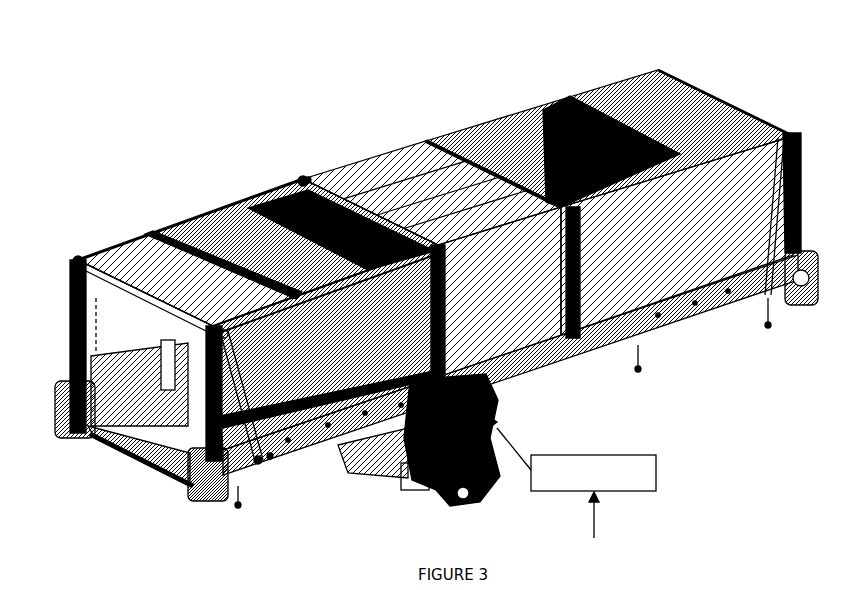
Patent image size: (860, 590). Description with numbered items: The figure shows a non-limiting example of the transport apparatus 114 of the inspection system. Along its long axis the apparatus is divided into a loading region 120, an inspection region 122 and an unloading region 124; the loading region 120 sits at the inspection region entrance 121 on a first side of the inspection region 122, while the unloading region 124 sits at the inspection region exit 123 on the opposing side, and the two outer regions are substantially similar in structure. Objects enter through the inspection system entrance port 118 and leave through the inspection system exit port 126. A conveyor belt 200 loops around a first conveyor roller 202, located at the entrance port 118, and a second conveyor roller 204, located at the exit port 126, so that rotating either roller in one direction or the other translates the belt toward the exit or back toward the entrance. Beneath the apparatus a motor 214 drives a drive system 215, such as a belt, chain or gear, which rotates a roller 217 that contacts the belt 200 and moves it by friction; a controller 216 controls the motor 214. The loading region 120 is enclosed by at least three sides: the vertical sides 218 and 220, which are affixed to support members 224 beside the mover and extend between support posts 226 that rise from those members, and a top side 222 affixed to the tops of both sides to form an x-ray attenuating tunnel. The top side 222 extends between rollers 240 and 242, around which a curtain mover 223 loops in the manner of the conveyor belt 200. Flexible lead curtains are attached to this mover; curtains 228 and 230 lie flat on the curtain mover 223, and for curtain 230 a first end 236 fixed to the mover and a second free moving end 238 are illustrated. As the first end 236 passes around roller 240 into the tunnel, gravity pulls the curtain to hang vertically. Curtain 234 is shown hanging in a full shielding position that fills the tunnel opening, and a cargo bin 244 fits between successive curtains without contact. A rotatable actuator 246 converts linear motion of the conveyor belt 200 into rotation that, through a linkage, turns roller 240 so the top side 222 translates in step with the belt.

The transport apparatus 114 is at (140, 85).
The inspection system entrance port 118 is at (90, 465).
The loading region 120 is at (292, 173).
The inspection region entrance 121 is at (305, 163).
The inspection region 122 is at (417, 128).
The inspection region exit 123 is at (417, 124).
The unloading region 124 is at (422, 128).
The inspection system exit port 126 is at (750, 82).
The conveyor belt 200 is at (176, 462).
The first conveyor roller 202 is at (58, 384).
The second conveyor roller 204 is at (57, 347).
The motor 214 is at (480, 378).
The drive system 215 is at (487, 498).
The controller 216 is at (592, 447).
The roller 217 is at (395, 458).
The side 218 is at (116, 306).
The side 220 is at (376, 356).
The top side 222 is at (243, 312).
The curtain mover 223 is at (285, 292).
The support member 224 is at (237, 472).
The support post 226 is at (60, 298).
The curtain 228 is at (139, 272).
The curtain 230 is at (245, 258).
The curtain 234 is at (157, 326).
The first end 236 is at (145, 232).
The second free moving end 238 is at (233, 200).
The roller 240 is at (62, 250).
The roller 242 is at (286, 172).
The cargo bin 244 is at (170, 391).
The rotatable actuator 246 is at (258, 450).